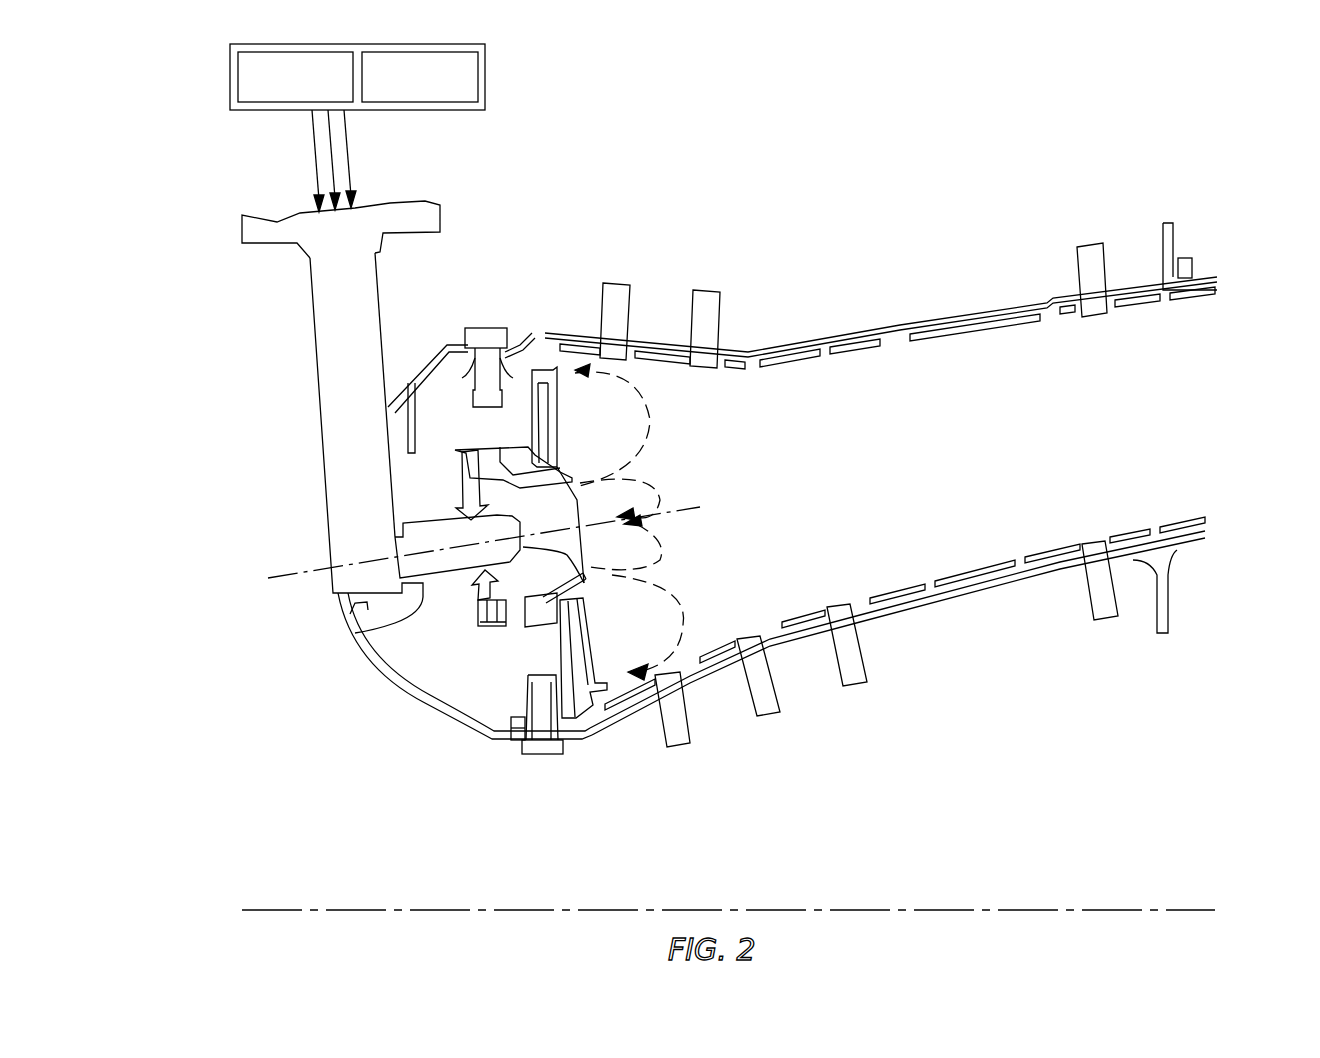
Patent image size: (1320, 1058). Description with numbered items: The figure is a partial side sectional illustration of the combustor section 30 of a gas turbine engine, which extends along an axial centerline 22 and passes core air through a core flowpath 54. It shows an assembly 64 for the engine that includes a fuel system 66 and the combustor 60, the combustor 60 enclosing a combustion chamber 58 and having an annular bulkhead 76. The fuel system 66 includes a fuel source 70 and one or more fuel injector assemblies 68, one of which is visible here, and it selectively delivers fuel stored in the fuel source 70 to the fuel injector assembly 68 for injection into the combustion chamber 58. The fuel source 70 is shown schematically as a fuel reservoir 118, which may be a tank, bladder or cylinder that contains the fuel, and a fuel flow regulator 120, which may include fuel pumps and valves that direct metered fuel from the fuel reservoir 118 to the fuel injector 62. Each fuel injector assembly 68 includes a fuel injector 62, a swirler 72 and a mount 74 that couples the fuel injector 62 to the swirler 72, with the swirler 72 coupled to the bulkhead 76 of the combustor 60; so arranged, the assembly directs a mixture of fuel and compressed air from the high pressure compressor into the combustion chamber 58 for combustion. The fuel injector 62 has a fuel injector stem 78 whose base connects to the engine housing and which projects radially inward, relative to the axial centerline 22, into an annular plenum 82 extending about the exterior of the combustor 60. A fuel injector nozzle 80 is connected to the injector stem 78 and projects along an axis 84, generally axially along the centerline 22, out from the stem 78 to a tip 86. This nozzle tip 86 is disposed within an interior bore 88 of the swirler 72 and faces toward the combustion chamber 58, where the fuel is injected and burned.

The axial centerline 22 is at (1186, 910).
The combustor section 30 is at (1137, 205).
The core flowpath 54 is at (1205, 429).
The combustion chamber 58 is at (906, 477).
The combustor 60 is at (898, 316).
The fuel injector 62 is at (318, 455).
The assembly 64 is at (198, 84).
The fuel system 66 is at (200, 208).
The fuel injector assembly 68 is at (300, 530).
The fuel source 70 is at (492, 77).
The swirler 72 is at (532, 637).
The mount 74 is at (474, 624).
The bulkhead 76 is at (550, 690).
The fuel injector stem 78 is at (316, 352).
The fuel injector nozzle 80 is at (365, 628).
The plenum 82 is at (490, 294).
The axis 84 is at (700, 508).
The tip 86 is at (578, 578).
The interior bore 88 is at (552, 517).
The fuel reservoir 118 is at (266, 107).
The fuel flow regulator 120 is at (438, 105).